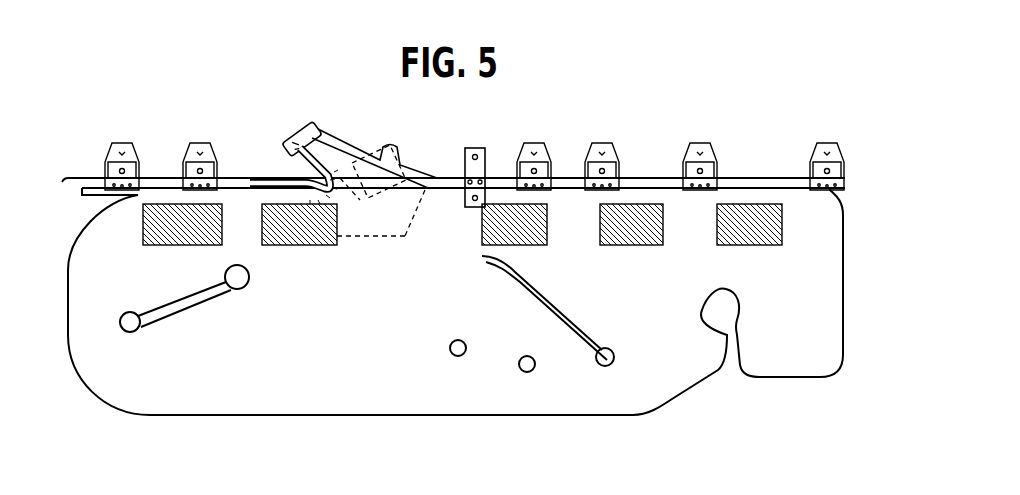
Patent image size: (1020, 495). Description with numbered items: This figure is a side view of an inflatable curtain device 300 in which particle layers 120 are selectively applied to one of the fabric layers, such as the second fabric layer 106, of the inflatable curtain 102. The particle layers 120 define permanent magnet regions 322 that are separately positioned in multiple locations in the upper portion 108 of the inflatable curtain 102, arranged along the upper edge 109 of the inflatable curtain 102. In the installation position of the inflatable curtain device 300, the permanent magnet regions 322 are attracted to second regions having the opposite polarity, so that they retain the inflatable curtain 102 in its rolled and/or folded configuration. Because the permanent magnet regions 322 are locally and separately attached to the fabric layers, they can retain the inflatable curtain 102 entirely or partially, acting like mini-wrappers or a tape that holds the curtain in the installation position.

The inflatable curtain device 300 is at (664, 120).
The inflatable curtain 102 is at (257, 388).
The second fabric layer 106 is at (656, 363).
The upper portion 108 is at (422, 222).
The upper edge 109 is at (497, 182).
The particle layers 120 is at (784, 222).
The permanent magnet regions 322 is at (272, 201).